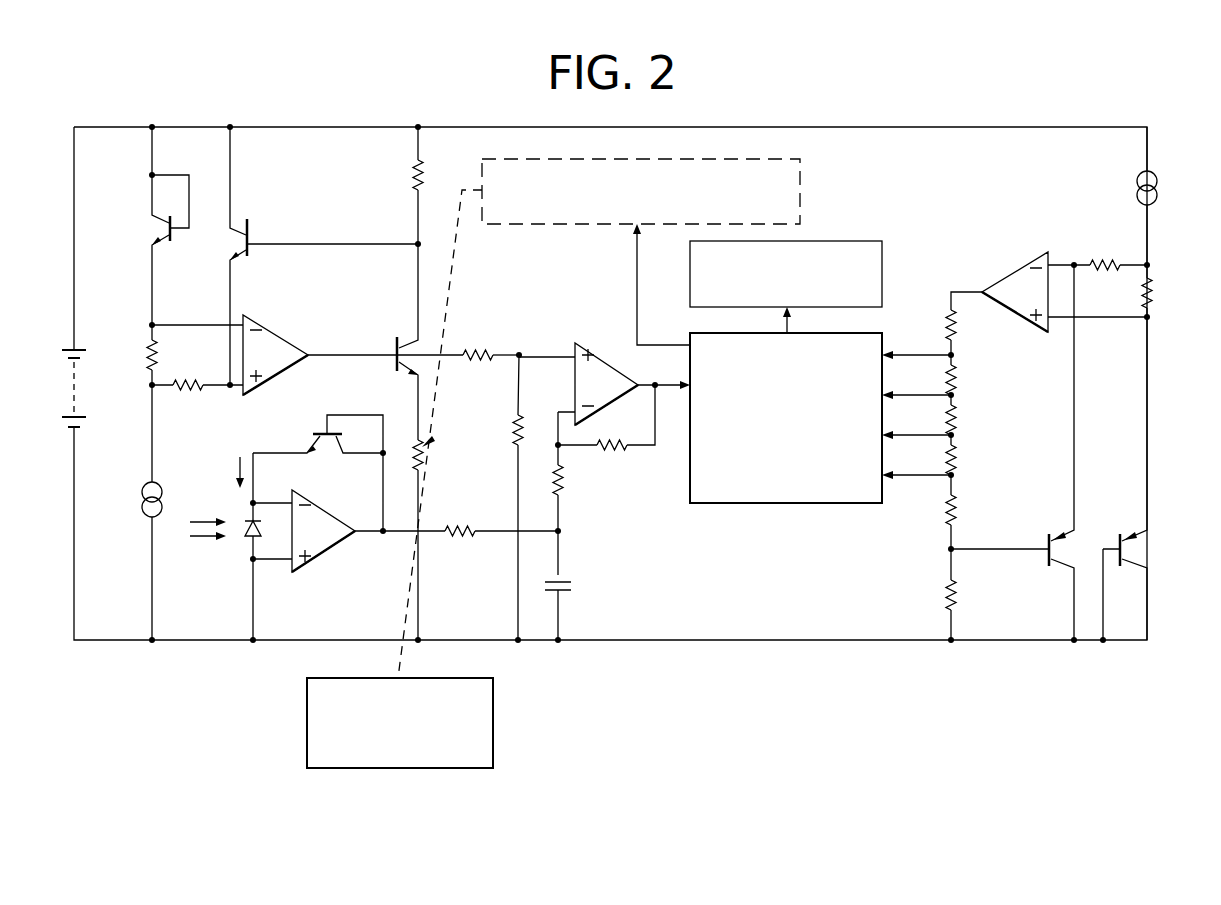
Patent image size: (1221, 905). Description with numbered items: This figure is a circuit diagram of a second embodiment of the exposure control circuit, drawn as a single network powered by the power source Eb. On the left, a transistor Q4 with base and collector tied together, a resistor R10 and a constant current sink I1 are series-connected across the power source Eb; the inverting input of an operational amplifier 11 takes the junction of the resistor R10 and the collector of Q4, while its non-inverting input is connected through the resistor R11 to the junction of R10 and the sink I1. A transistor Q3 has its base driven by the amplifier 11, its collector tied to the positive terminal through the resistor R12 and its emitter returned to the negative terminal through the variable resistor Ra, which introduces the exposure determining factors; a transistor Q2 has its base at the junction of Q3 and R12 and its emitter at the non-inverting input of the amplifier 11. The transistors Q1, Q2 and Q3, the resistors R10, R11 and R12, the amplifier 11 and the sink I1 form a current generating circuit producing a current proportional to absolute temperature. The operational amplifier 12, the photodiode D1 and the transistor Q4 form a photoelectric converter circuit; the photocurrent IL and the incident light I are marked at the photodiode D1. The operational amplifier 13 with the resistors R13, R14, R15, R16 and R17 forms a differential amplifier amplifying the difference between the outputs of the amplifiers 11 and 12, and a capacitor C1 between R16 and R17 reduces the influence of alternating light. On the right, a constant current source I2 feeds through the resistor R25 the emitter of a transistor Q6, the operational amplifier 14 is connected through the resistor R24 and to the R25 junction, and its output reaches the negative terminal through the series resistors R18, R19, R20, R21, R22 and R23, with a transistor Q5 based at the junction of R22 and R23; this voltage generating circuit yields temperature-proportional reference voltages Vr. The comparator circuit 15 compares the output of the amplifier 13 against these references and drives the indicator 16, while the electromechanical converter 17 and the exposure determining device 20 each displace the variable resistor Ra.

The transistor Q1 is at (160, 229).
The transistor Q2 is at (236, 246).
The transistor Q3 is at (395, 346).
The transistor Q4 is at (318, 431).
The transistor Q5 is at (1060, 546).
The transistor Q6 is at (1131, 546).
The resistor R10 is at (160, 348).
The resistor R11 is at (195, 390).
The resistor R12 is at (412, 183).
The resistor R13 is at (486, 350).
The resistor R14 is at (512, 431).
The resistor R15 is at (612, 455).
The resistor R16 is at (462, 540).
The resistor R17 is at (573, 490).
The resistor R18 is at (958, 324).
The resistor R19 is at (958, 379).
The resistor R20 is at (958, 418).
The resistor R21 is at (958, 459).
The resistor R22 is at (958, 509).
The resistor R23 is at (958, 594).
The resistor R24 is at (1102, 262).
The resistor R25 is at (1141, 295).
The variable resistor Ra is at (426, 453).
The capacitor C1 is at (572, 586).
The photodiode D1 is at (251, 540).
The power source Eb is at (88, 415).
The constant current sink I1 is at (141, 496).
The constant current source I2 is at (1137, 186).
The photocurrent IL is at (238, 469).
The incident light I is at (200, 547).
The reference voltage Vr is at (916, 421).
The operational amplifier 11 is at (270, 328).
The operational amplifier 12 is at (320, 563).
The operational amplifier 13 is at (613, 356).
The operational amplifier 14 is at (1016, 265).
The comparator circuit 15 is at (783, 505).
The indicator 16 is at (848, 240).
The electromechanical converter 17 is at (536, 228).
The exposure determining device 20 is at (493, 700).